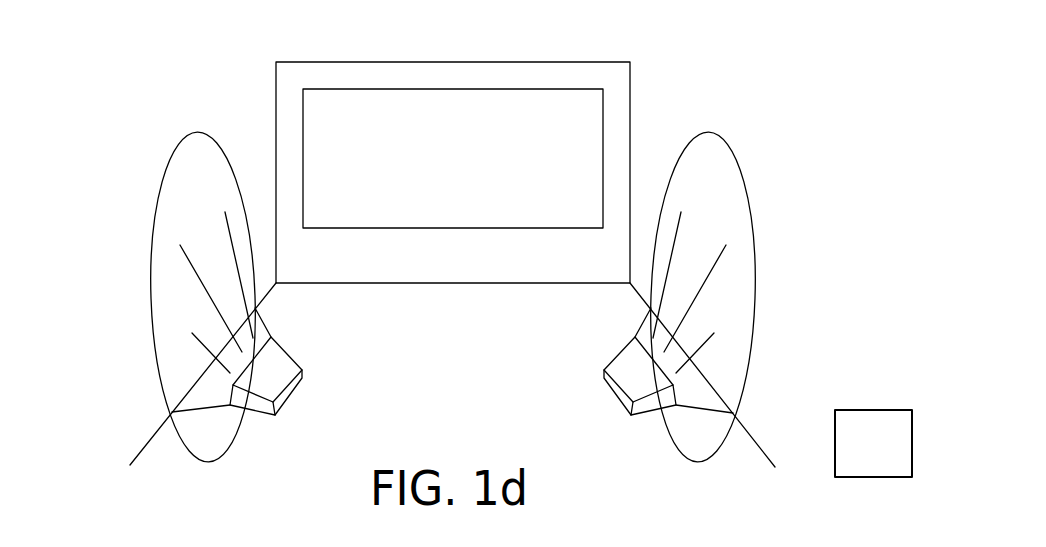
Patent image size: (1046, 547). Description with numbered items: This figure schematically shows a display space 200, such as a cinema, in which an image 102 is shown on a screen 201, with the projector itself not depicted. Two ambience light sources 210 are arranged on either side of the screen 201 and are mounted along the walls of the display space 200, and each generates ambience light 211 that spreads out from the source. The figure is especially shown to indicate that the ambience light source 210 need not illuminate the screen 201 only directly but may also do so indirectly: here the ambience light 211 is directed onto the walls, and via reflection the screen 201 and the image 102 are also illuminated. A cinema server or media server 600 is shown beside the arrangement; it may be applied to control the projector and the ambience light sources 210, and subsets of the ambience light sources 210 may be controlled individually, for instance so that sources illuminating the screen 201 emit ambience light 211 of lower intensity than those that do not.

The image 102 is at (328, 68).
The screen 201 is at (545, 102).
The display space 200 is at (735, 72).
The ambience light 211 is at (175, 240).
The ambience light source 210 is at (614, 393).
The cinema server 600 is at (882, 403).